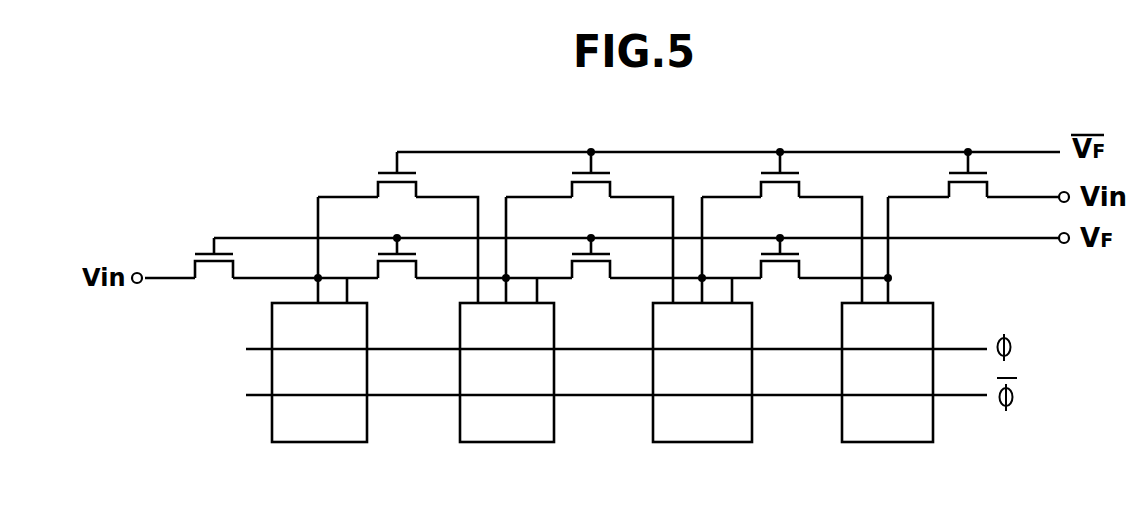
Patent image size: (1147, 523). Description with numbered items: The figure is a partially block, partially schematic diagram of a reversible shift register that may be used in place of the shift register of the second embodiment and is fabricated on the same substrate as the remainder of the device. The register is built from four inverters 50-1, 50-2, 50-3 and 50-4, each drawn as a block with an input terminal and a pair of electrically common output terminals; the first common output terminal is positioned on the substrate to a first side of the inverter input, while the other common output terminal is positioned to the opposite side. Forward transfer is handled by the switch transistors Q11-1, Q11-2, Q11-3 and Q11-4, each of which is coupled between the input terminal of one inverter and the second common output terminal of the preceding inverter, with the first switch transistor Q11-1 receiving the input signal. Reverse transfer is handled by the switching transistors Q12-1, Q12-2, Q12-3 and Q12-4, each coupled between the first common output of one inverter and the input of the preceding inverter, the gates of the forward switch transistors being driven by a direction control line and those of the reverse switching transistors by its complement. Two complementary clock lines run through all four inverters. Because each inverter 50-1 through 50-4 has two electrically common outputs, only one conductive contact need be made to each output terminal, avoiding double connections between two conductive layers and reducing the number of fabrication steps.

The switch transistor Q11-1 is at (213, 268).
The switch transistor Q11-2 is at (396, 268).
The switch transistor Q11-3 is at (590, 268).
The switch transistor Q11-4 is at (779, 268).
The switching transistor Q12-1 is at (396, 187).
The switching transistor Q12-2 is at (590, 187).
The switching transistor Q12-3 is at (779, 187).
The switching transistor Q12-4 is at (967, 187).
The inverter 50-1 is at (367, 422).
The inverter 50-2 is at (554, 422).
The inverter 50-3 is at (752, 422).
The inverter 50-4 is at (933, 422).